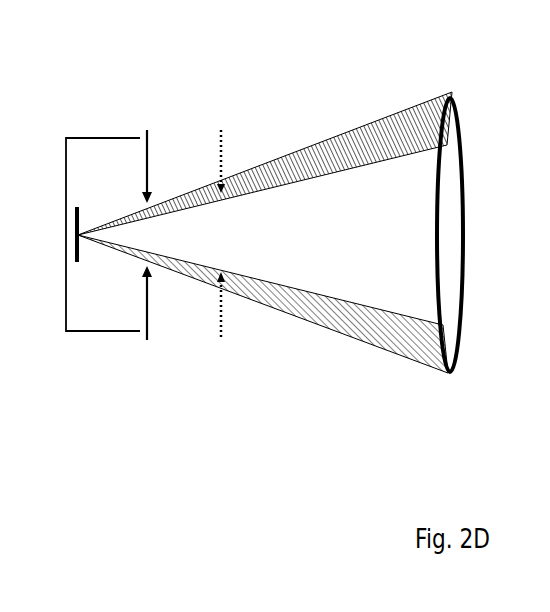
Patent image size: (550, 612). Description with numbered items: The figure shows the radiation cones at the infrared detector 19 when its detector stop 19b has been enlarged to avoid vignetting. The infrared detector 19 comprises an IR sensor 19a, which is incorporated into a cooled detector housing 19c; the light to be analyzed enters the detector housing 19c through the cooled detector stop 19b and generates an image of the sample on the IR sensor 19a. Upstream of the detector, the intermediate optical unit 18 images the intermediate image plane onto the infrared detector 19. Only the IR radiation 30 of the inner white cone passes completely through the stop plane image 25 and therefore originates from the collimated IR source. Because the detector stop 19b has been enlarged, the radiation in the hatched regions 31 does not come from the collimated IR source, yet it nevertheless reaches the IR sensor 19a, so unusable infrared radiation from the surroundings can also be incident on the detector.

The intermediate optical unit 18 is at (450, 217).
The infrared detector 19 is at (107, 270).
The IR sensor 19a is at (86, 217).
The detector stop 19b is at (142, 222).
The detector housing 19c is at (82, 218).
The stop plane image 25 is at (221, 218).
The IR radiation 30 is at (326, 207).
The hatched regions 31 is at (385, 330).